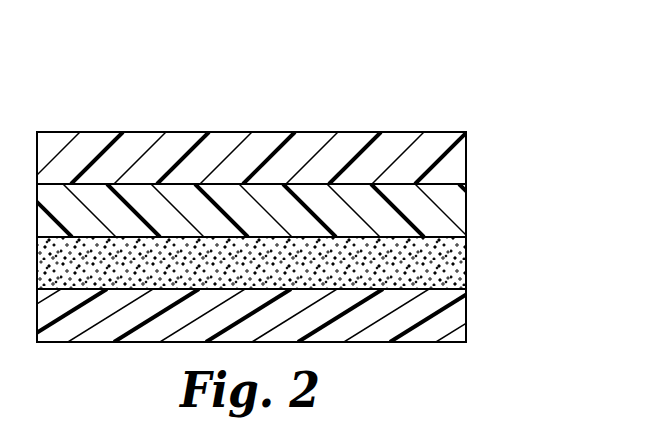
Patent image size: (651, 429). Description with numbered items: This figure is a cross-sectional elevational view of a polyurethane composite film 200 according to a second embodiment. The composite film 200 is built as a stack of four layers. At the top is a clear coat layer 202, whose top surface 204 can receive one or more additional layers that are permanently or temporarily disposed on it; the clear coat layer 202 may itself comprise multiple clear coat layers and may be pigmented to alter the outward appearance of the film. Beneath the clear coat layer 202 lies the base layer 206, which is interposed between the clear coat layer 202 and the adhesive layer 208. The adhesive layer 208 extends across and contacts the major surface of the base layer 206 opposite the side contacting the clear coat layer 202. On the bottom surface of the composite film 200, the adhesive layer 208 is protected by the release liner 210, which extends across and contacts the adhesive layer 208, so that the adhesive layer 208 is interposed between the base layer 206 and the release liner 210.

The composite film 200 is at (486, 58).
The clear coat layer 202 is at (453, 160).
The top surface 204 is at (448, 131).
The base layer 206 is at (453, 217).
The adhesive layer 208 is at (453, 265).
The release liner 210 is at (453, 320).